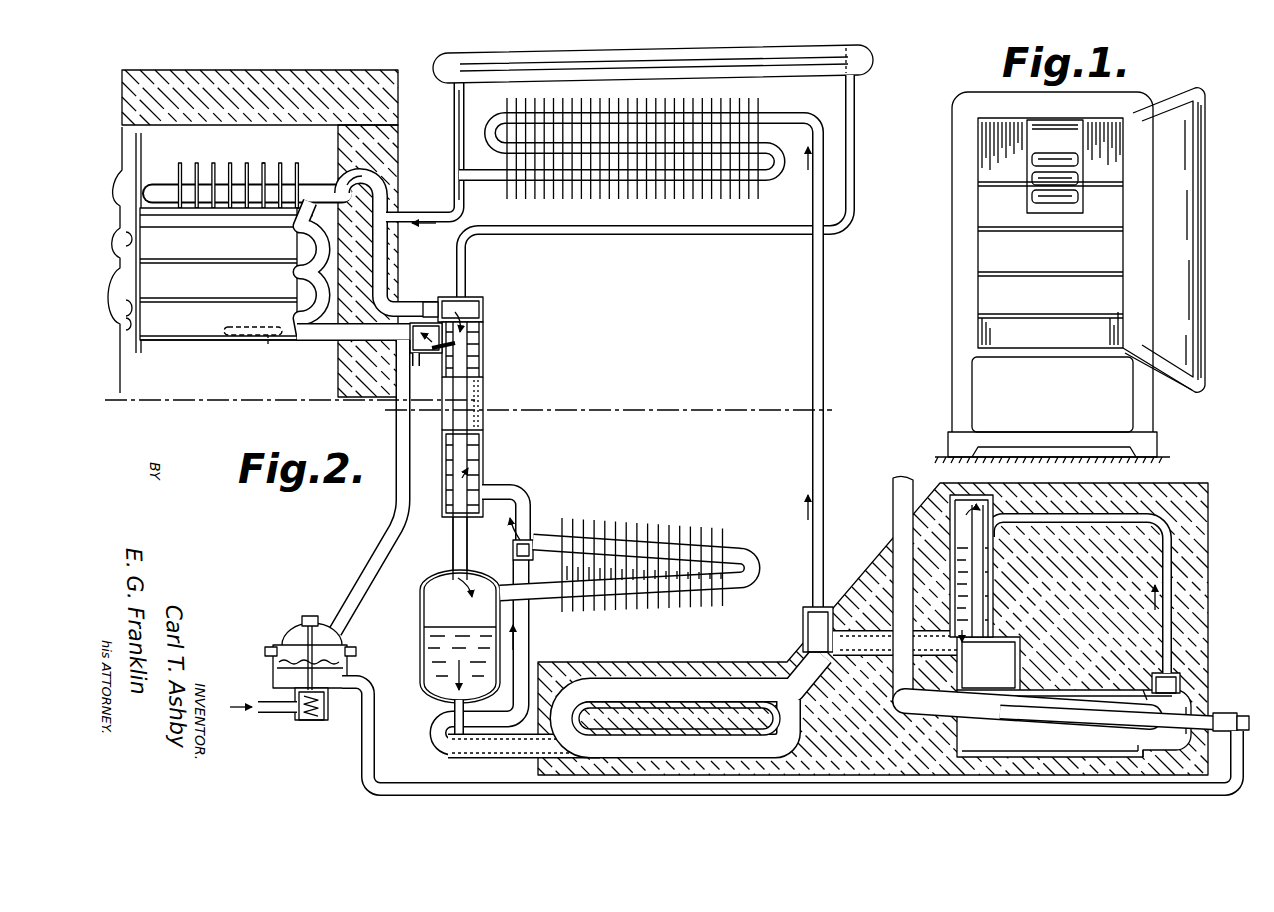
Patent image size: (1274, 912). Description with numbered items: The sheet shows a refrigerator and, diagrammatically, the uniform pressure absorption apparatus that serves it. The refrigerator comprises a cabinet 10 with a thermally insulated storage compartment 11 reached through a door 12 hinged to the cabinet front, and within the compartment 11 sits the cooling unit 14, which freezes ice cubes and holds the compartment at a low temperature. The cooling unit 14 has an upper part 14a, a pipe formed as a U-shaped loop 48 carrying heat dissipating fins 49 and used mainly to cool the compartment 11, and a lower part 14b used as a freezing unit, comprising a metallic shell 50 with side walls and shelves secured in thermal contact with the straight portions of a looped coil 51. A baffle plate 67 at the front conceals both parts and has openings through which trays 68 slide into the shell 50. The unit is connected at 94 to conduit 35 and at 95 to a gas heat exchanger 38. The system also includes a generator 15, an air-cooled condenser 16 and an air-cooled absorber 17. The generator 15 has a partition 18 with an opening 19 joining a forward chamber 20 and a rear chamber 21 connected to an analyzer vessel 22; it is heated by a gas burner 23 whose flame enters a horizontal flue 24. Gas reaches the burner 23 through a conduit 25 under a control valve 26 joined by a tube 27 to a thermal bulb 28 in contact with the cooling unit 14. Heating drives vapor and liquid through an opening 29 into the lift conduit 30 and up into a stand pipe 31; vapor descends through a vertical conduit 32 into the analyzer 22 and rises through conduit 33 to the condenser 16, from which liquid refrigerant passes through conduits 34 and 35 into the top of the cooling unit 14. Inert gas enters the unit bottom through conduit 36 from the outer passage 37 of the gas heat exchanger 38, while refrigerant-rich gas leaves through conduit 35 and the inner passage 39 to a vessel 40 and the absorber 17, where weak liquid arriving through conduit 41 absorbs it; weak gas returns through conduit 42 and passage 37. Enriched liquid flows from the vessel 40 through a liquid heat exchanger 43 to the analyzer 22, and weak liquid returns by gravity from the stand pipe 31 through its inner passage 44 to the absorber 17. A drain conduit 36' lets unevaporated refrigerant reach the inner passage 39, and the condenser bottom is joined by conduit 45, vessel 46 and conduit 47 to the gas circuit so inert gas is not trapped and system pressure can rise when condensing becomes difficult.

In FIG. 1, the cabinet 10 is at (944, 113).
In FIG. 1, the storage compartment 11 is at (1060, 254).
In FIG. 2, the storage compartment 11 is at (216, 391).
In FIG. 1, the door 12 is at (1207, 259).
In FIG. 1, the cooling unit 14 is at (1023, 155).
In FIG. 2, the cooling unit 14 is at (200, 344).
In FIG. 2, the upper evaporator part 14a is at (173, 188).
In FIG. 2, the lower evaporator part 14b is at (158, 350).
In FIG. 2, the generator 15 is at (1068, 690).
In FIG. 2, the condenser 16 is at (644, 178).
In FIG. 2, the absorber 17 is at (742, 560).
In FIG. 2, the partition 18 is at (1148, 694).
In FIG. 2, the opening 19 is at (1152, 736).
In FIG. 2, the forward chamber 20 is at (1222, 712).
In FIG. 2, the rear chamber 21 is at (1040, 724).
In FIG. 2, the analyzer vessel 22 is at (874, 631).
In FIG. 2, the gas burner 23 is at (1244, 716).
In FIG. 2, the horizontal flue 24 is at (958, 714).
In FIG. 2, the conduit 25 is at (392, 792).
In FIG. 2, the control valve 26 is at (283, 646).
In FIG. 2, the tube 27 is at (390, 548).
In FIG. 2, the thermal bulb 28 is at (267, 345).
In FIG. 2, the opening 29 is at (1172, 690).
In FIG. 2, the conduit 30 is at (1164, 565).
In FIG. 2, the stand pipe 31 is at (994, 588).
In FIG. 2, the vertical conduit 32 is at (984, 566).
In FIG. 2, the conduit 33 is at (824, 410).
In FIG. 2, the conduit 34 is at (440, 210).
In FIG. 2, the conduit 35 is at (342, 180).
In FIG. 2, the conduit 36 is at (356, 357).
In FIG. 2, the drain conduit 36' is at (466, 326).
In FIG. 2, the outer passage 37 is at (482, 338).
In FIG. 2, the gas heat exchanger 38 is at (478, 420).
In FIG. 2, the inner passage 39 is at (476, 366).
In FIG. 2, the vessel 40 is at (444, 574).
In FIG. 2, the conduit 41 is at (526, 636).
In FIG. 2, the conduit 42 is at (528, 498).
In FIG. 2, the liquid heat exchanger 43 is at (612, 690).
In FIG. 2, the inner passage 44 is at (800, 648).
In FIG. 2, the conduit 45 is at (454, 130).
In FIG. 2, the vessel 46 is at (528, 58).
In FIG. 2, the conduit 47 is at (556, 226).
In FIG. 2, the U-shaped loop 48 is at (238, 185).
In FIG. 2, the fins 49 is at (266, 168).
In FIG. 2, the shell 50 is at (230, 342).
In FIG. 2, the looped coil 51 is at (308, 258).
In FIG. 1, the baffle plate 67 is at (1076, 141).
In FIG. 2, the baffle plate 67 is at (130, 194).
In FIG. 1, the trays 68 is at (1068, 193).
In FIG. 2, the trays 68 is at (124, 298).
In FIG. 2, the connection 94 is at (345, 184).
In FIG. 2, the connection 95 is at (404, 366).